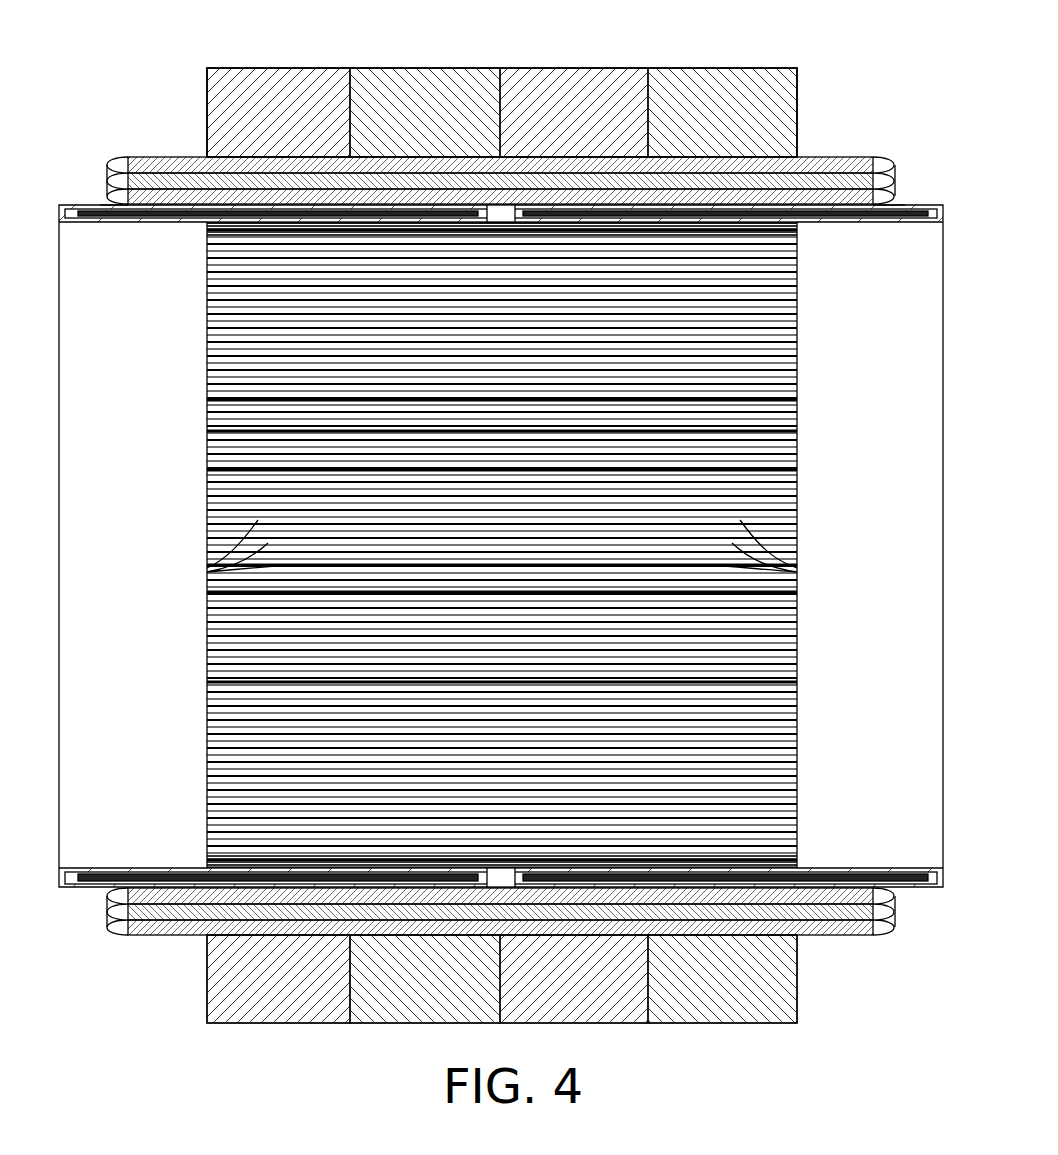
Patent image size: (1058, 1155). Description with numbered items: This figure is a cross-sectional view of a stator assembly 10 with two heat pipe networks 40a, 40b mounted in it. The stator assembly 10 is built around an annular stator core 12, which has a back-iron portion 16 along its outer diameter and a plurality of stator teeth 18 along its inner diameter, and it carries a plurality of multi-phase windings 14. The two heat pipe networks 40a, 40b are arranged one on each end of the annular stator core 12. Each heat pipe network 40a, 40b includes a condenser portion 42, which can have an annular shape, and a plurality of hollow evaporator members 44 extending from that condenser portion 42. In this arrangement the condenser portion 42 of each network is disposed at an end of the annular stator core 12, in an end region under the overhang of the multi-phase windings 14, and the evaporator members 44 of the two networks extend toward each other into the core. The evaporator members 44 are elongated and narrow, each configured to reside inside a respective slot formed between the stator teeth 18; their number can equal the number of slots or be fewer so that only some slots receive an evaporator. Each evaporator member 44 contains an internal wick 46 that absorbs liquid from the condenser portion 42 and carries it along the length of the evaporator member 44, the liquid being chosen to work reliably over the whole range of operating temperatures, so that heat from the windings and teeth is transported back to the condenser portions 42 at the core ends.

The stator assembly 10 is at (840, 104).
The annular stator core 12 is at (719, 64).
The multi-phase windings 14 is at (828, 160).
The back-iron portion 16 is at (207, 108).
The stator teeth 18 is at (500, 213).
The heat pipe network 40a is at (100, 192).
The heat pipe network 40b is at (906, 192).
The condenser portion 42 is at (172, 868).
The evaporator members 44 is at (470, 212).
The internal wick 46 is at (142, 218).